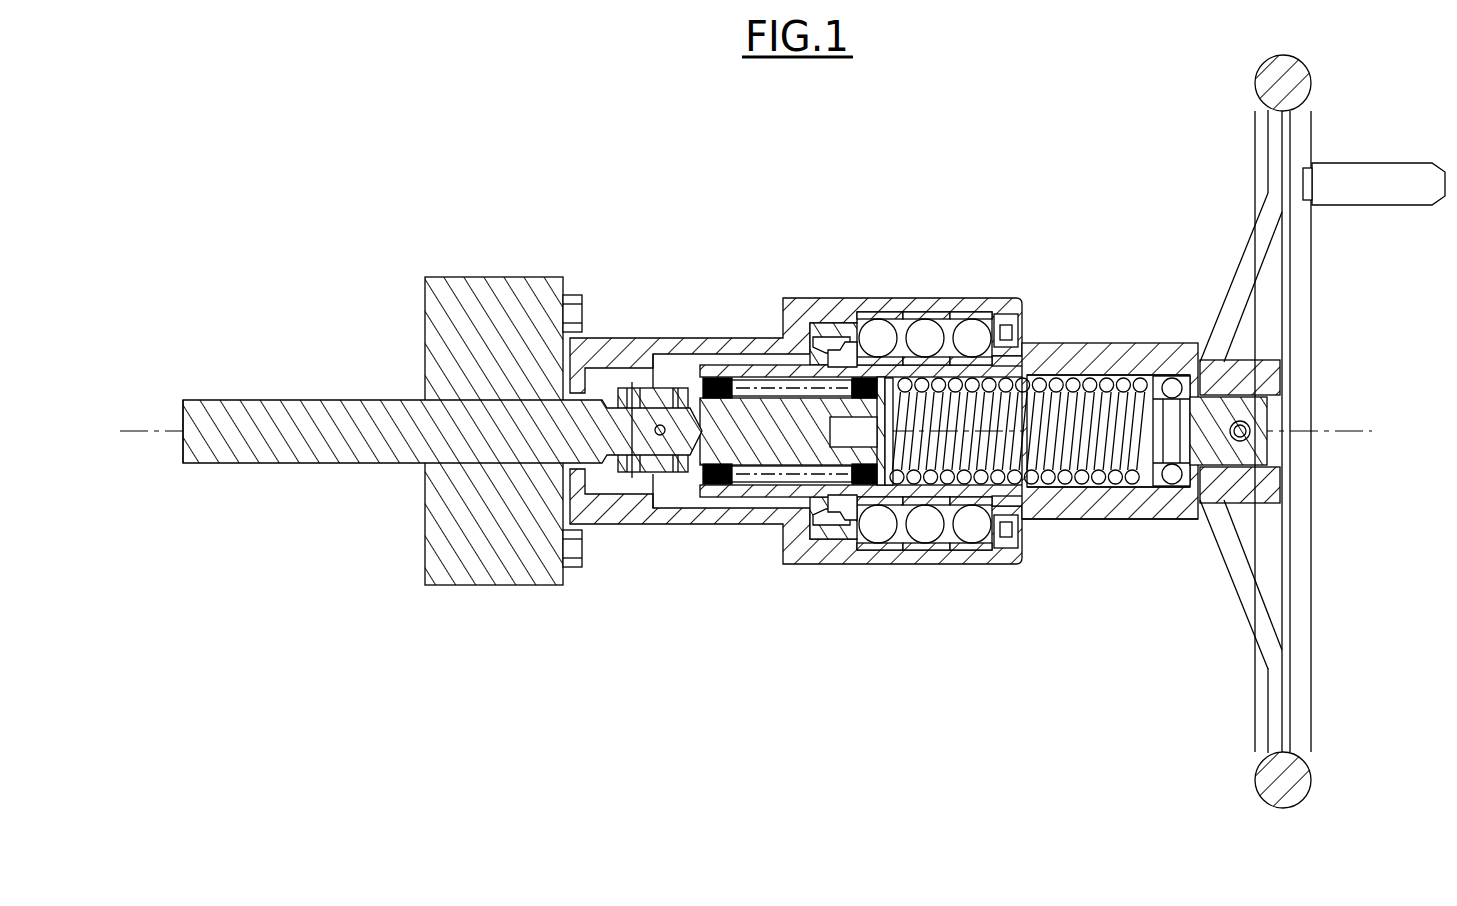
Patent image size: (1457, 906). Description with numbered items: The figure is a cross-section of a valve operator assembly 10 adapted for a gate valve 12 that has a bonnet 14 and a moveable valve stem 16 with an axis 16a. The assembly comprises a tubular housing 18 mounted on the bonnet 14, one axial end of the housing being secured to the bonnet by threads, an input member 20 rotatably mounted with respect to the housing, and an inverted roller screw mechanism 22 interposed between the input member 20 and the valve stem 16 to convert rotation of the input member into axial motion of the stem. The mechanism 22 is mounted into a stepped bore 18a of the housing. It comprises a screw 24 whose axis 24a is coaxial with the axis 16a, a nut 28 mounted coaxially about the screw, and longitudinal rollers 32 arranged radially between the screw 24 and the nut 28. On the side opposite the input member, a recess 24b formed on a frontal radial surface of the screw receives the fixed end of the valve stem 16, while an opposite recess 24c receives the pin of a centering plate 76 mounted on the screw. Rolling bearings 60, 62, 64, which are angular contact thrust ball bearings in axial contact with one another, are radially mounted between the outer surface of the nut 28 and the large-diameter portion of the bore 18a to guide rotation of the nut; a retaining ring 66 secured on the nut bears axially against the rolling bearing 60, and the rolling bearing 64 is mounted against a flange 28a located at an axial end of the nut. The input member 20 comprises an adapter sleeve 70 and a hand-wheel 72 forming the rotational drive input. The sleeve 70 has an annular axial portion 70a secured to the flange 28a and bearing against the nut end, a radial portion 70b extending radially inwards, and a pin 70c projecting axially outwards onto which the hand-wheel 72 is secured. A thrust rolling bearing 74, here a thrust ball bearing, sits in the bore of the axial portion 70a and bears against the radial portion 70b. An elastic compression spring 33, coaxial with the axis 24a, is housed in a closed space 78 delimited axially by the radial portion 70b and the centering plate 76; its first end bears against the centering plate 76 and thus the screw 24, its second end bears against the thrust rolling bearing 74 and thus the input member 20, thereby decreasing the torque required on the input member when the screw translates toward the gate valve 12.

The valve operator assembly 10 is at (893, 170).
The gate valve 12 is at (522, 250).
The bonnet 14 is at (470, 290).
The valve stem 16 is at (292, 400).
The axis of the valve stem 16a is at (162, 430).
The tubular housing 18 is at (812, 296).
The bore of the housing 18a is at (698, 362).
The input member 20 is at (1352, 112).
The inverted roller screw mechanism 22 is at (773, 507).
The screw 24 is at (808, 449).
The axis of the screw 24a is at (162, 430).
The recess 24b is at (635, 437).
The recess 24c is at (863, 444).
The nut 28 is at (713, 490).
The flange of the nut 28a is at (1043, 356).
The longitudinal rollers 32 is at (757, 480).
The elastic spring 33 is at (1122, 378).
The rolling bearing 60 is at (891, 313).
The rolling bearing 62 is at (942, 313).
The rolling bearing 64 is at (988, 313).
The retaining ring 66 is at (843, 342).
The adapter sleeve 70 is at (1170, 343).
The annular axial portion 70a is at (1067, 508).
The radial portion 70b is at (1200, 525).
The pin 70c is at (1265, 400).
The hand-wheel 72 is at (1305, 712).
The thrust rolling bearing 74 is at (1160, 494).
The centering plate 76 is at (877, 535).
The closed space 78 is at (1077, 352).